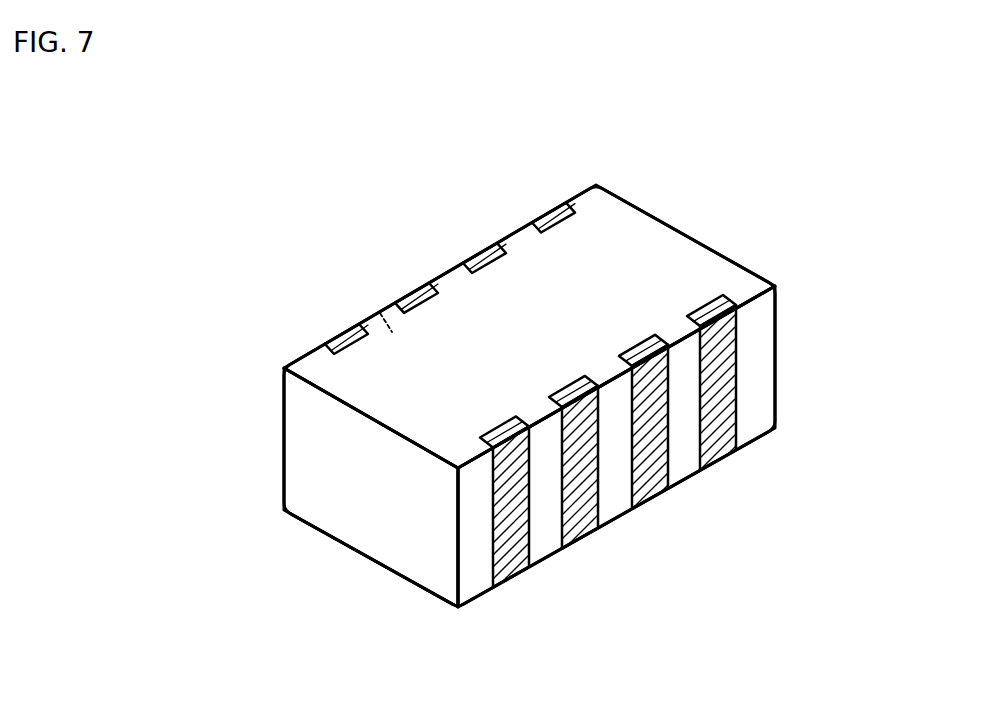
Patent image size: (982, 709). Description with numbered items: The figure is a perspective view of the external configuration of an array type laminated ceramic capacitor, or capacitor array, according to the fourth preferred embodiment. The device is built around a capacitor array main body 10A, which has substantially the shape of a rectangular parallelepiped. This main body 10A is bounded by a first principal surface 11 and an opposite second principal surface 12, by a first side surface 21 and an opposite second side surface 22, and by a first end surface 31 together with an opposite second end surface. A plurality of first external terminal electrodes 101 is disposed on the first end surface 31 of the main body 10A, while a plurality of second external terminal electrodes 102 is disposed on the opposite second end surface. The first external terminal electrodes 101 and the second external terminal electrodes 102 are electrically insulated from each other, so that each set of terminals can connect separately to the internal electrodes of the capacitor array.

The capacitor array main body 10A is at (641, 206).
The first principal surface 11 is at (657, 258).
The second principal surface 12 is at (400, 577).
The first side surface 21 is at (350, 522).
The second side surface 22 is at (680, 288).
The first end surface 31 is at (380, 312).
The first external terminal electrodes 101 is at (485, 256).
The second external terminal electrodes 102 is at (728, 452).